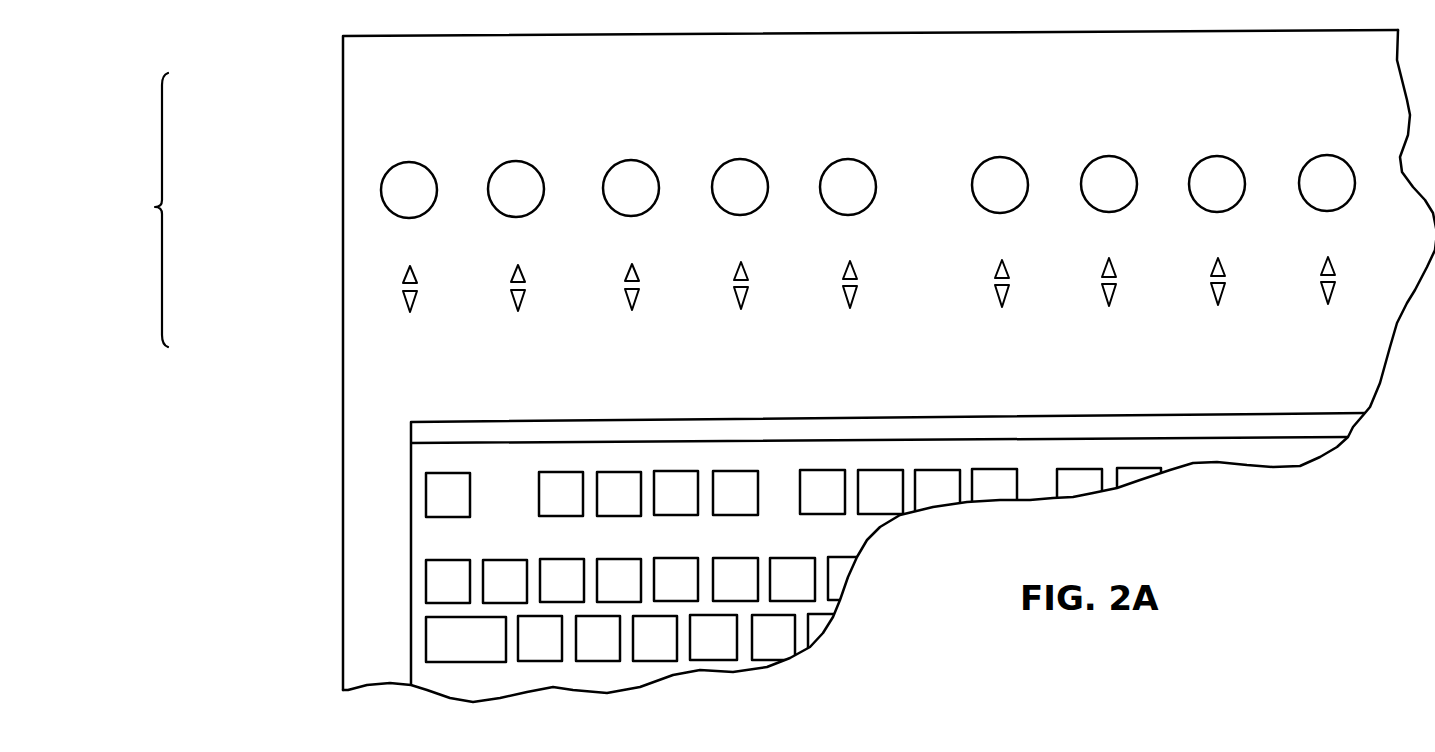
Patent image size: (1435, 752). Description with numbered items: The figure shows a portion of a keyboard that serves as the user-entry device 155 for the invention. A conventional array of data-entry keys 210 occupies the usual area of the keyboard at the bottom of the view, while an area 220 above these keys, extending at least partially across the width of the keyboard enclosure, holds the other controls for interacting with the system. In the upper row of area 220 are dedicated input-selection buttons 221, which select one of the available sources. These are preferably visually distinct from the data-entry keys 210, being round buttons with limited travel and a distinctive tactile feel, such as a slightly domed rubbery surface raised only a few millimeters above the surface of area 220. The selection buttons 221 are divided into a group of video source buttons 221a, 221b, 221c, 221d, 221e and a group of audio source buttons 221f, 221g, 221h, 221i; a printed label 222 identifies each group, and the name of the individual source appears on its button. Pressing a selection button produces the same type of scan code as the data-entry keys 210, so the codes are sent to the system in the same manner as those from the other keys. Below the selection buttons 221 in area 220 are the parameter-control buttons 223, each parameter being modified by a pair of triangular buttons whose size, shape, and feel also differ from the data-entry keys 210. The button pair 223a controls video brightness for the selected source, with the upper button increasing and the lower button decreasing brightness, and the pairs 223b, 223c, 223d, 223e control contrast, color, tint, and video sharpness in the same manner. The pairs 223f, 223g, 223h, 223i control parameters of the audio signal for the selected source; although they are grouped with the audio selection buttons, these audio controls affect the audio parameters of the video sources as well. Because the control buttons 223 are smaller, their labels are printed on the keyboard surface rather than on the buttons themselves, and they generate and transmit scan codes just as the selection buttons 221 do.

The user-entry device 155 is at (135, 210).
The data-entry keys 210 is at (312, 556).
The area 220 is at (234, 228).
The input-selection buttons 221 is at (336, 191).
The video source-selection button 221a is at (409, 162).
The video source-selection button 221b is at (516, 161).
The video source-selection button 221c is at (631, 160).
The video source-selection button 221d is at (740, 159).
The video source-selection button 221e is at (848, 159).
The audio source-selection button 221f is at (1000, 157).
The audio source-selection button 221g is at (1109, 156).
The audio source-selection button 221h is at (1217, 156).
The audio source-selection button 221i is at (1327, 155).
The printed label 222 is at (610, 72).
The parameter-control buttons 223 is at (336, 288).
The brightness button pair 223a is at (409, 268).
The contrast button pair 223b is at (517, 267).
The color button pair 223c is at (631, 266).
The tint button pair 223d is at (740, 265).
The video sharpness button pair 223e is at (849, 264).
The audio parameter button pair 223f is at (1001, 263).
The audio parameter button pair 223g is at (1108, 261).
The audio parameter button pair 223h is at (1217, 261).
The audio parameter button pair 223i is at (1327, 260).